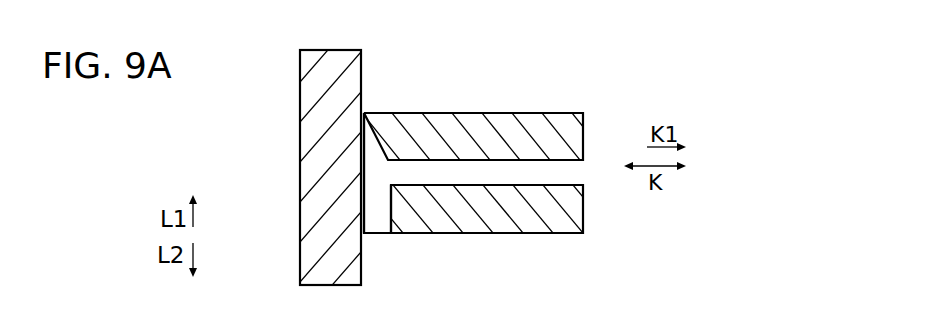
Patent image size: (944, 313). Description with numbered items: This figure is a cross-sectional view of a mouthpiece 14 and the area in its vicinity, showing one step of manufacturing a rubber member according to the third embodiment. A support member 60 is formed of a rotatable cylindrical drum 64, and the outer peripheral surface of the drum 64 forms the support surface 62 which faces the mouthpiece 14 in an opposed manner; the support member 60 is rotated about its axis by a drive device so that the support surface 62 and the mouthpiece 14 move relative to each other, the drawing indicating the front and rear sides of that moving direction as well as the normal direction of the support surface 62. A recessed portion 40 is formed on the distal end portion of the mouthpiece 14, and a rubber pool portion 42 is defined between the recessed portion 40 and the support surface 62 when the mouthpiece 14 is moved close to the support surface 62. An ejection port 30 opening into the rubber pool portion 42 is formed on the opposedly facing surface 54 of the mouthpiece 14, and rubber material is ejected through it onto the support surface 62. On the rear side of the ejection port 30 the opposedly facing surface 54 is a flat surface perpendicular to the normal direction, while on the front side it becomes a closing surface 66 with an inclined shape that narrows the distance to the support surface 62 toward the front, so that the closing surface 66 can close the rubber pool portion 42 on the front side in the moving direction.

The mouthpiece 14 is at (422, 178).
The ejection port 30 is at (380, 173).
The recessed portion 40 is at (391, 224).
The rubber pool portion 42 is at (372, 200).
The opposedly facing surface 54 is at (391, 209).
The support member 60 is at (295, 161).
The support surface 62 is at (361, 66).
The cylindrical drum 64 is at (295, 161).
The closing surface 66 is at (373, 135).